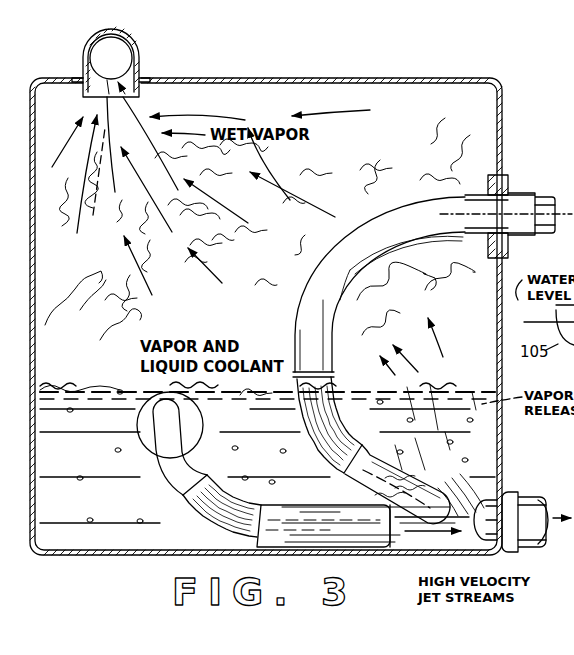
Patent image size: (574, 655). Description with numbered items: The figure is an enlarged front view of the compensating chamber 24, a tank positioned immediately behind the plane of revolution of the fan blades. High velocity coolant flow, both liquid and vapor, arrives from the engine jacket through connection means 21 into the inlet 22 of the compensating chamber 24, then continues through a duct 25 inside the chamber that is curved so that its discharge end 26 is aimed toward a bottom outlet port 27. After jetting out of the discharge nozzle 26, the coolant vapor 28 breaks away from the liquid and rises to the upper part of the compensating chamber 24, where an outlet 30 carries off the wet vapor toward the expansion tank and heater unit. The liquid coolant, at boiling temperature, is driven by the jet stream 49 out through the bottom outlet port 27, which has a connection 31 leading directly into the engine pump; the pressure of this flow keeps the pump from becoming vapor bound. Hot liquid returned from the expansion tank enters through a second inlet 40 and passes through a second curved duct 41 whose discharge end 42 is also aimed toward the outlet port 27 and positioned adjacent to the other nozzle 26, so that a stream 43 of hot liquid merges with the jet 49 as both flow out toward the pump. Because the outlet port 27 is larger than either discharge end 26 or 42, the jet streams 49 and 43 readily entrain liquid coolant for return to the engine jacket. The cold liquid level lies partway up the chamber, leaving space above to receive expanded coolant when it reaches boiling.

The connection means 21 is at (552, 207).
The inlet 22 is at (508, 194).
The compensating chamber 24 is at (409, 72).
The duct 25 is at (386, 212).
The discharge end 26 is at (392, 548).
The bottom outlet port 27 is at (508, 494).
The coolant vapor 28 is at (470, 438).
The outlet 30 is at (143, 73).
The connection 31 is at (547, 500).
The second inlet 40 is at (150, 425).
The second curved duct 41 is at (178, 484).
The discharge end 42 is at (356, 548).
The stream 43 is at (433, 540).
The jet stream 49 is at (482, 545).